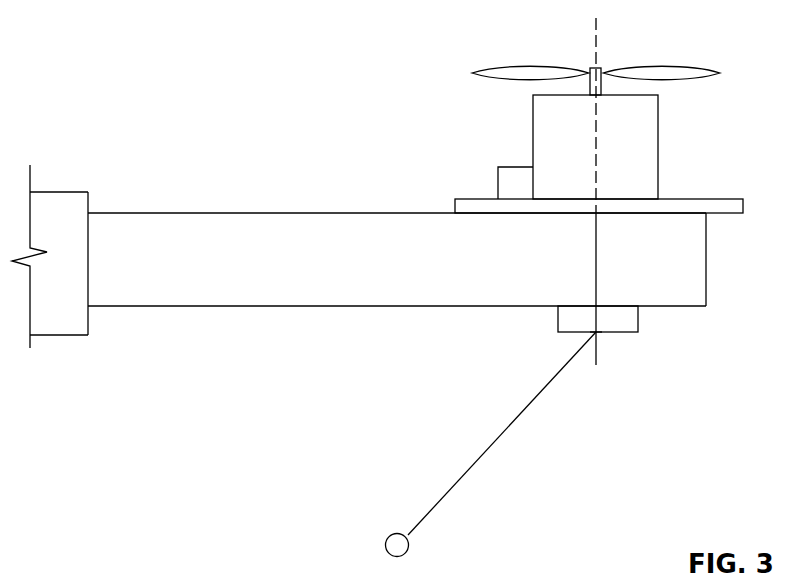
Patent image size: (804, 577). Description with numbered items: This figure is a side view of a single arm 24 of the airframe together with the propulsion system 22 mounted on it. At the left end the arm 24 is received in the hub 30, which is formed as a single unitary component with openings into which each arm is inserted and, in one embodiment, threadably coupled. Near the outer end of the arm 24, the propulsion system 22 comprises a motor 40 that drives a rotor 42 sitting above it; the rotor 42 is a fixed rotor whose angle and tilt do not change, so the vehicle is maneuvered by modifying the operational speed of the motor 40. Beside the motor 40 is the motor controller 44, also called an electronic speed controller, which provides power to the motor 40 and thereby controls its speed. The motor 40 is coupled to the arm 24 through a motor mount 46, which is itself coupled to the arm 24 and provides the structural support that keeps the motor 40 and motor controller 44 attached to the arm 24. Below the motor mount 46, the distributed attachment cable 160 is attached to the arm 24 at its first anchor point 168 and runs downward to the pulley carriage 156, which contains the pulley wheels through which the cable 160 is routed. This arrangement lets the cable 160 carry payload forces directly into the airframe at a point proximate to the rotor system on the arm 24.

The propulsion system 22 is at (620, 225).
The arm 24 is at (291, 260).
The hub 30 is at (74, 313).
The motor 40 is at (644, 171).
The rotor 42 is at (703, 48).
The motor controller 44 is at (498, 188).
The motor mount 46 is at (743, 210).
The pulley carriage 156 is at (396, 533).
The distributed attachment cable 160 is at (520, 417).
The first anchor point 168 is at (592, 334).